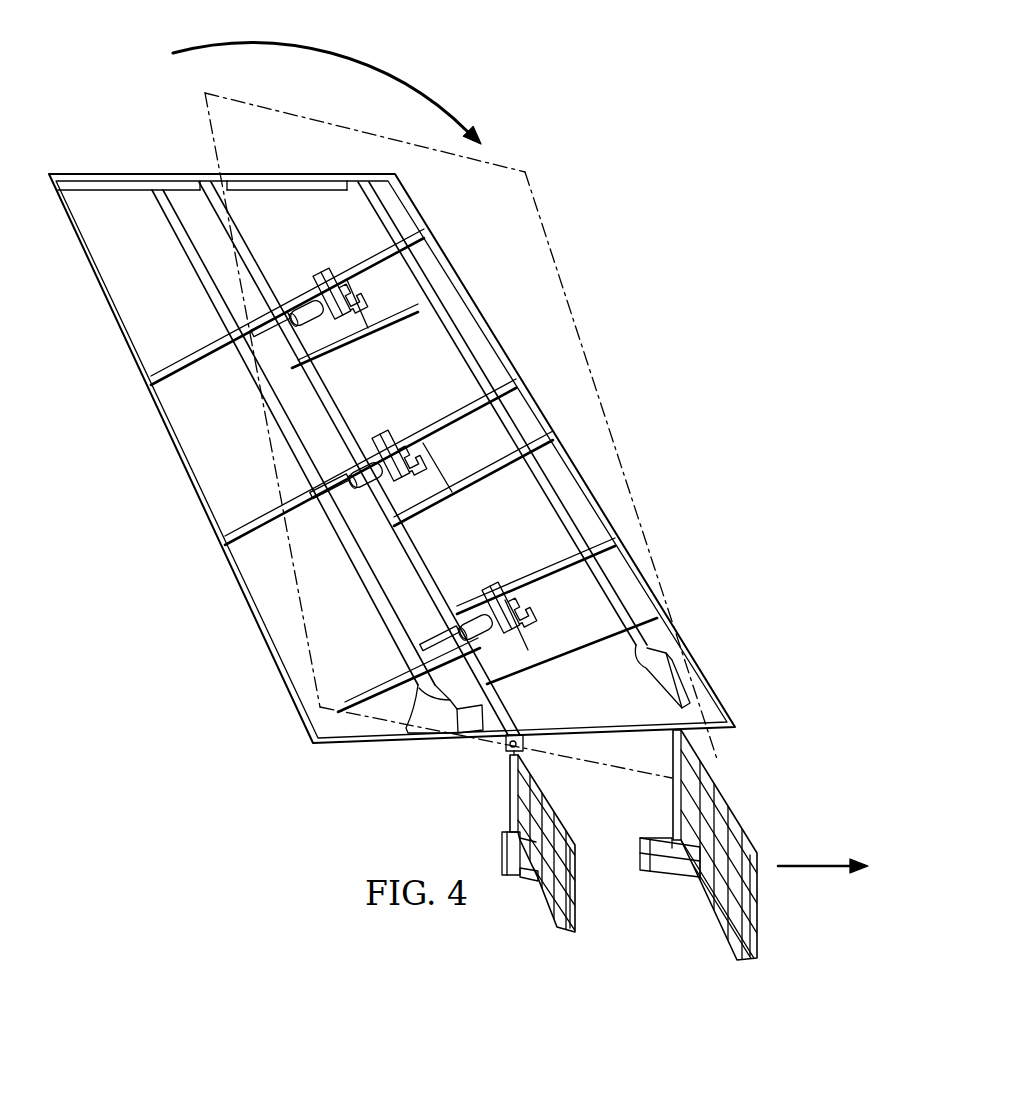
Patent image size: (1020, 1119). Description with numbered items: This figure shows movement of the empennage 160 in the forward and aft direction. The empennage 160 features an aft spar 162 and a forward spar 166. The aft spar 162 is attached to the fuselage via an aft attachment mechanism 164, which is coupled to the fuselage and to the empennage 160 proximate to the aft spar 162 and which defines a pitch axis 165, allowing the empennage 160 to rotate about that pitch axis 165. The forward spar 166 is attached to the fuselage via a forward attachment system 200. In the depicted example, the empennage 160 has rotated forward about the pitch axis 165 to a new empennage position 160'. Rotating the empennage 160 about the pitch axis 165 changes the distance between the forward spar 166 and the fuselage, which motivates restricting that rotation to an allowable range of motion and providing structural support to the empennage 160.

The empennage 160 is at (392, 458).
The new empennage position 160' is at (461, 435).
The aft spar 162 is at (262, 252).
The aft attachment mechanism 164 is at (518, 749).
The pitch axis 165 is at (508, 750).
The forward spar 166 is at (543, 505).
The forward attachment system 200 is at (680, 678).